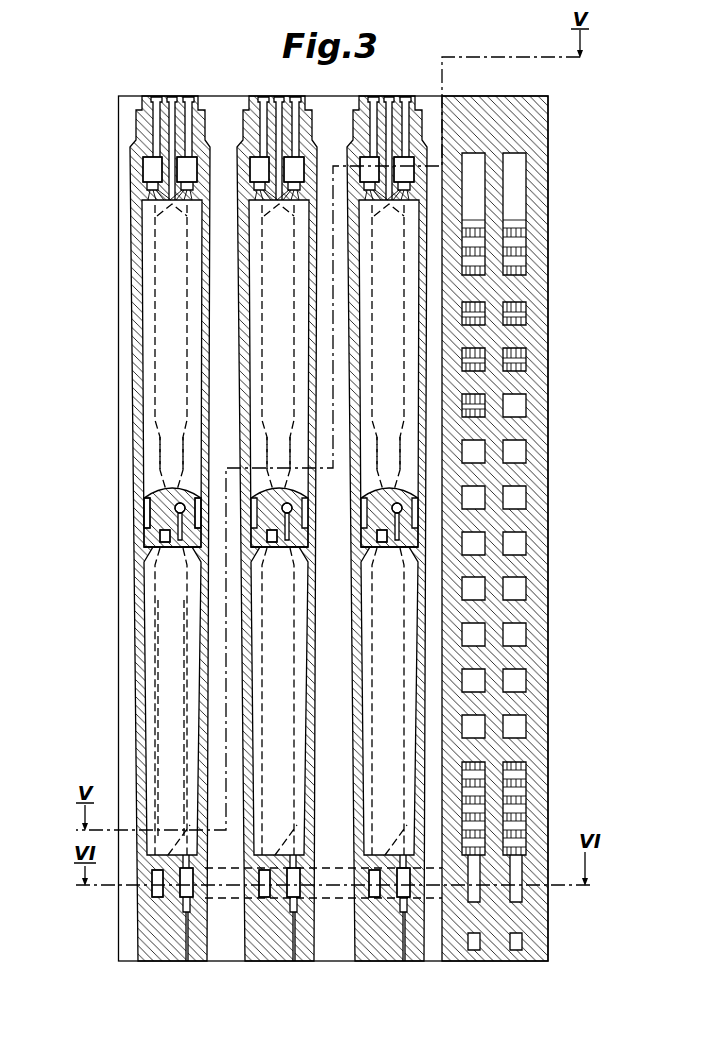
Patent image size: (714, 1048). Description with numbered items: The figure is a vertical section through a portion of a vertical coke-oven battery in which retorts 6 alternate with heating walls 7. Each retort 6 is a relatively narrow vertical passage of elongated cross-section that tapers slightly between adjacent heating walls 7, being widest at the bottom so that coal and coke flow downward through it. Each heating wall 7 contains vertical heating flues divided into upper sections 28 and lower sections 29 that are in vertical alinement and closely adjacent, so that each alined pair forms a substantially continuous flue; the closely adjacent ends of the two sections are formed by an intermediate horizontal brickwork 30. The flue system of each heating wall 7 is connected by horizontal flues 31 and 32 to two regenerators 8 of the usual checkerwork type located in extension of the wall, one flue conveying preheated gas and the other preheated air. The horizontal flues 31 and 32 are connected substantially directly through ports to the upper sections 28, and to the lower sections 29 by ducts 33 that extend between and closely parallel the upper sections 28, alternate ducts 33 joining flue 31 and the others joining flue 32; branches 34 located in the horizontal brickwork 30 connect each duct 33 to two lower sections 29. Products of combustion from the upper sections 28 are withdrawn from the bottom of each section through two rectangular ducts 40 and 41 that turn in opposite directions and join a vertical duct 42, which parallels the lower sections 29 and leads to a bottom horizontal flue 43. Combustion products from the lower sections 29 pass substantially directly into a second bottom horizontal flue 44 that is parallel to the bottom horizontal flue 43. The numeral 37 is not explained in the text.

The retort 6 is at (333, 528).
The heating wall 7 is at (132, 388).
The regenerator 8 is at (527, 494).
The upper section 28 is at (141, 300).
The lower section 29 is at (145, 586).
The horizontal brickwork 30 is at (146, 538).
The horizontal flue 31 is at (145, 161).
The horizontal flue 32 is at (188, 160).
The duct 33 is at (281, 265).
The branch 34 is at (151, 549).
The piston 37 is at (146, 501).
The rectangular duct 40 is at (146, 518).
The rectangular duct 41 is at (199, 521).
The vertical duct 42 is at (161, 722).
The bottom horizontal flue 43 is at (157, 891).
The second bottom horizontal flue 44 is at (181, 896).